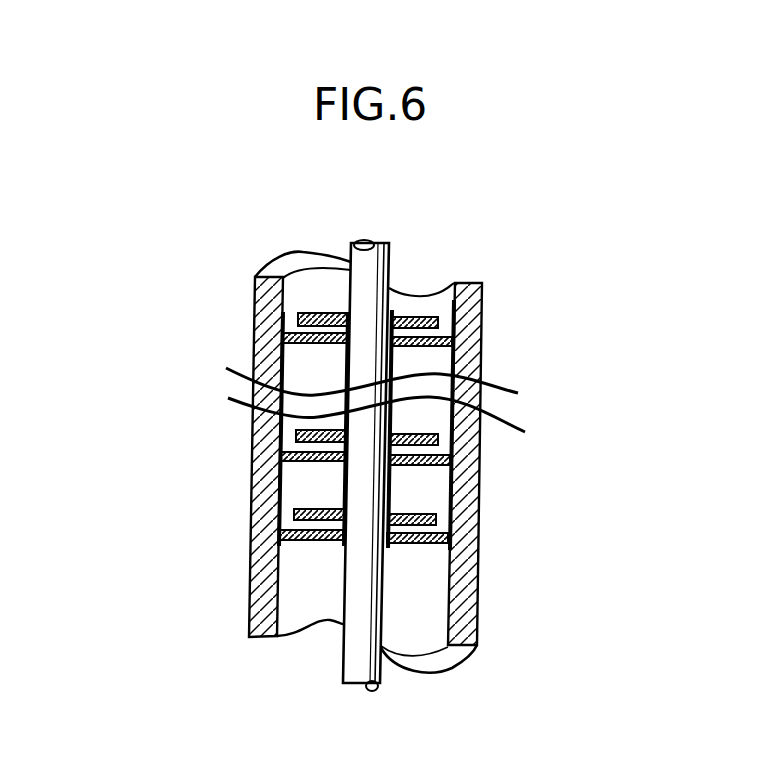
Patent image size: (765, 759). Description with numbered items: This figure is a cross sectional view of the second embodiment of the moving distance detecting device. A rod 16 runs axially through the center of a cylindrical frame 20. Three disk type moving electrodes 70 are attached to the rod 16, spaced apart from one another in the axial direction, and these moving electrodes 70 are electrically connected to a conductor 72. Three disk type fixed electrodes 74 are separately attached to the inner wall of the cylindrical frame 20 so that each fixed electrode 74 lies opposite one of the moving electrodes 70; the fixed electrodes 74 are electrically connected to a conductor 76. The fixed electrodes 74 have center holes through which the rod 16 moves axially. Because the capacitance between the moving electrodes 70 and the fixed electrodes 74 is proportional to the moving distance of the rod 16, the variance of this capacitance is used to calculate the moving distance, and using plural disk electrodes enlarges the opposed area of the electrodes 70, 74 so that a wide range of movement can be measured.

The rod 16 is at (353, 658).
The cylindrical frame 20 is at (255, 307).
The moving electrode 70 is at (313, 314).
The conductor 72 is at (471, 373).
The fixed electrode 74 is at (447, 353).
The conductor 76 is at (468, 292).